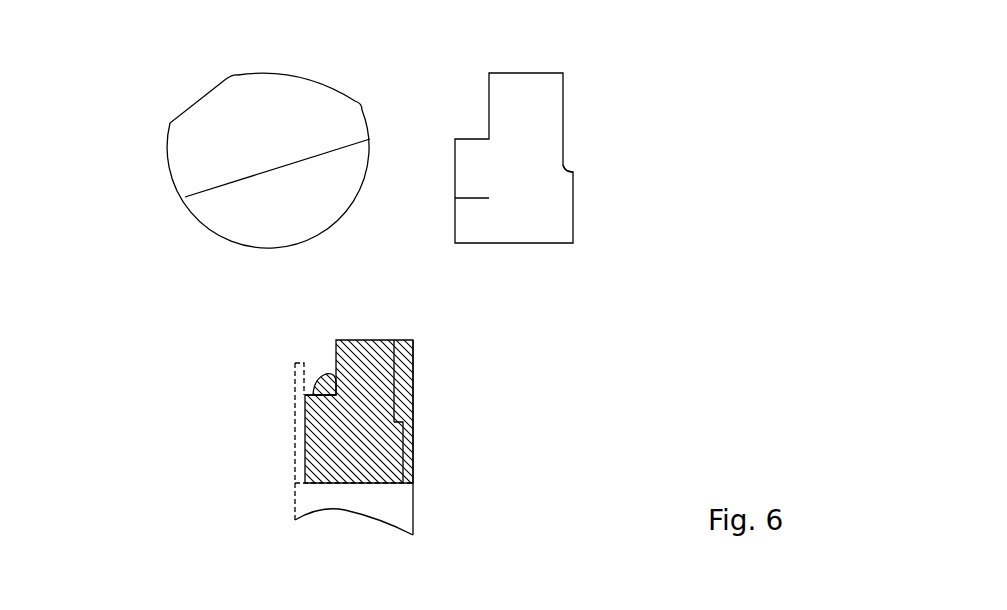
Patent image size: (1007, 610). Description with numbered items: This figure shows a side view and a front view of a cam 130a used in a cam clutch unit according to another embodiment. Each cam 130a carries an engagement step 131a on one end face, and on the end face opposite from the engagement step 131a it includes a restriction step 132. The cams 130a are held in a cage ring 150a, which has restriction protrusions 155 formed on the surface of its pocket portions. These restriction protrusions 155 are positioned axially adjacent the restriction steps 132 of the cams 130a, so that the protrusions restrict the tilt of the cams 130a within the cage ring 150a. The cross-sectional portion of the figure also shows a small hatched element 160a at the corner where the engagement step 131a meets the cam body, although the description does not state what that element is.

The cam 130a is at (252, 123).
The engagement step 131a is at (280, 168).
The restriction step 132 is at (568, 168).
The restriction protrusion 155 is at (393, 380).
The weld / fillet 160a is at (320, 377).
The cage ring 150a is at (413, 447).